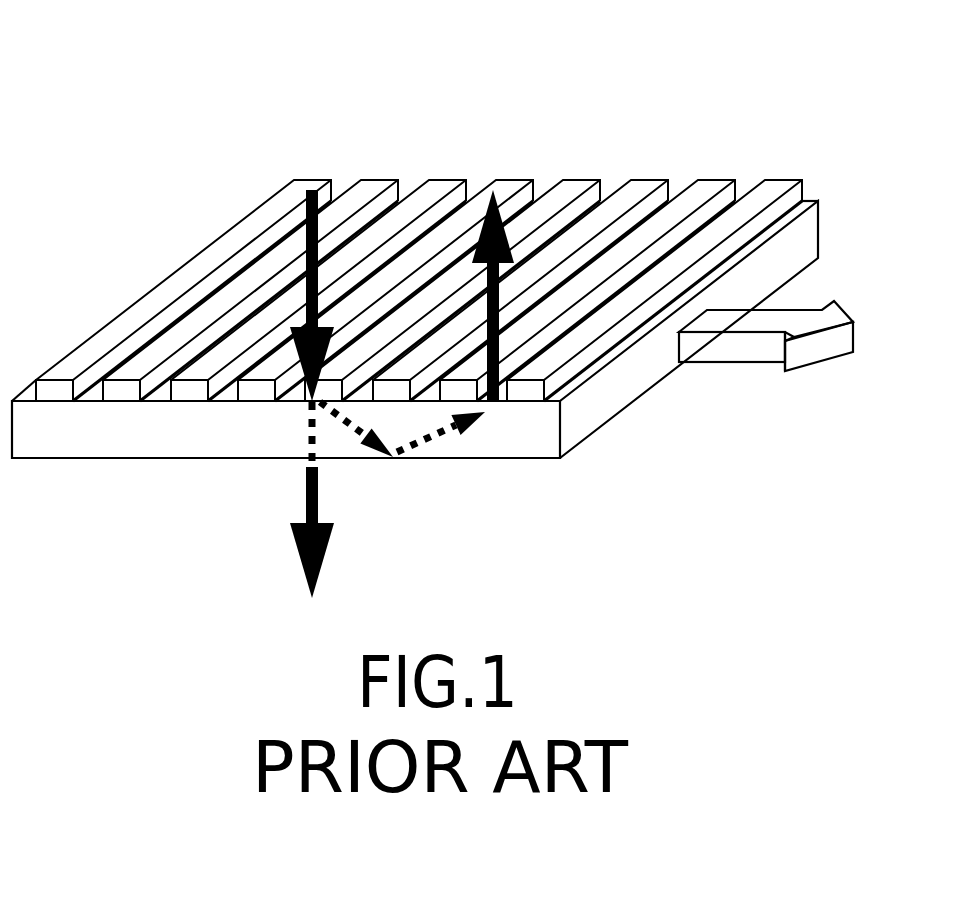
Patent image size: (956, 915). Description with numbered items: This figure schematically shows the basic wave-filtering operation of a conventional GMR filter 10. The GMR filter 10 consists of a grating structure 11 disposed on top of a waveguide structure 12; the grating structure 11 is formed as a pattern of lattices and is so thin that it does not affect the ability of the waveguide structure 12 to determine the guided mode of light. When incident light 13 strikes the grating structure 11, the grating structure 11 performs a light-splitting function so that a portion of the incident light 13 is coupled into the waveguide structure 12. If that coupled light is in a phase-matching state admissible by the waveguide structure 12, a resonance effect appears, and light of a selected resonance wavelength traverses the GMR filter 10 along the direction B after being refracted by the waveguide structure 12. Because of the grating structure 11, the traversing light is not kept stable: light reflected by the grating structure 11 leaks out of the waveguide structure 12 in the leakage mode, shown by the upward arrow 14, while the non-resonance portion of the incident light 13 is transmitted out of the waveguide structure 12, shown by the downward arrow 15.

The GMR filter 10 is at (415, 268).
The grating structure 11 is at (117, 325).
The waveguide structure 12 is at (118, 433).
The incident light 13 is at (305, 233).
The reflected light beam 14 is at (500, 192).
The transmitted light beam 15 is at (295, 545).
The direction B is at (785, 322).